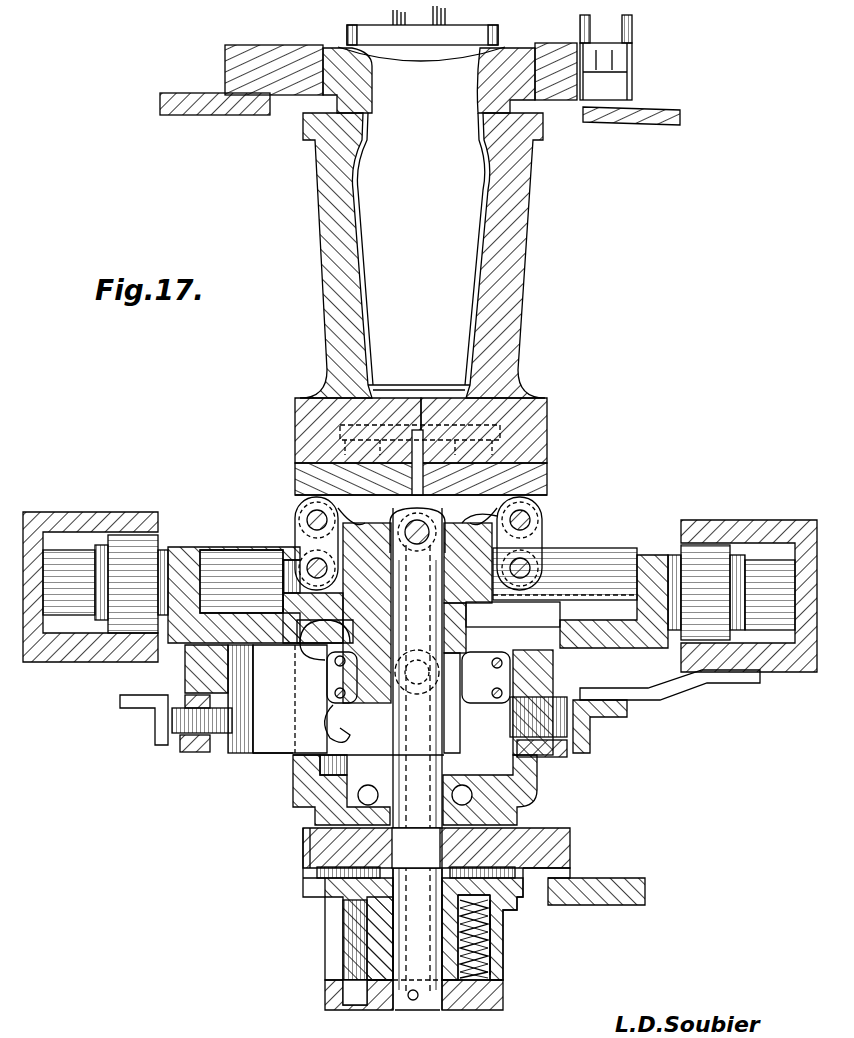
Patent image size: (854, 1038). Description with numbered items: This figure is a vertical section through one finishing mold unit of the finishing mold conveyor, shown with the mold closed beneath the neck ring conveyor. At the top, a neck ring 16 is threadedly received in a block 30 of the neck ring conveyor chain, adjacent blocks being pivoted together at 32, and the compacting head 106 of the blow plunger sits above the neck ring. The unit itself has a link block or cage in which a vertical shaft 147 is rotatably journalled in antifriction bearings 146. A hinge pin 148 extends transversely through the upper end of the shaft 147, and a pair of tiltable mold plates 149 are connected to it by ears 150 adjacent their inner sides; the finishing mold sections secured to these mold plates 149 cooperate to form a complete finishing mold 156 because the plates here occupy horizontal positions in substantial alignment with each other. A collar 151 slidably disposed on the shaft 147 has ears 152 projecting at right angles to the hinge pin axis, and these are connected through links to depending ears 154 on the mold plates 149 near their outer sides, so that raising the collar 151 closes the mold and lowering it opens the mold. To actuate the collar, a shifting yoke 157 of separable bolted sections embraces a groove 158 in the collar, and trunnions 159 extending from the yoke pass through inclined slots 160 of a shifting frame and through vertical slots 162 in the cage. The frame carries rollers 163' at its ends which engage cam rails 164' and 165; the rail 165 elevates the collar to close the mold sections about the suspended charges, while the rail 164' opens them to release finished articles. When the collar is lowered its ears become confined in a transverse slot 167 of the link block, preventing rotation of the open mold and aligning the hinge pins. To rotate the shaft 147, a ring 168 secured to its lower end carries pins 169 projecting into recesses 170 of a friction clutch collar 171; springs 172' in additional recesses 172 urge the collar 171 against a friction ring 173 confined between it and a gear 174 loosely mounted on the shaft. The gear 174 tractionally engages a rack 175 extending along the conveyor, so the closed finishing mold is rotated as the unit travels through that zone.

The neck ring 16 is at (333, 48).
The block 30 is at (225, 50).
The pivot 32 is at (632, 40).
The compacting head 106 is at (368, 30).
The antifriction bearings 146 is at (360, 800).
The vertical shaft 147 is at (417, 1010).
The hinge pin 148 is at (417, 605).
The tiltable mold plates 149 is at (547, 478).
The ears 150 is at (418, 527).
The collar 151 is at (456, 735).
The ears 152 is at (345, 590).
The depending ears 154 is at (298, 495).
The finishing mold 156 is at (530, 240).
The shifting yoke 157 is at (332, 680).
The groove 158 is at (325, 640).
The trunnions 159 is at (417, 759).
The inclined slots 160 is at (351, 729).
The vertical slots 162 is at (417, 709).
The rollers 163' is at (233, 699).
The cam rail 164' is at (139, 728).
The cam rail 165 is at (590, 745).
The transverse slot 167 is at (560, 592).
The ring 168 is at (503, 993).
The pins 169 is at (343, 953).
The recesses 170 is at (330, 912).
The friction clutch collar 171 is at (490, 960).
The recesses 172 is at (505, 937).
The springs 172' is at (524, 937).
The friction ring 173 is at (317, 874).
The gear 174 is at (303, 855).
The rack 175 is at (618, 868).